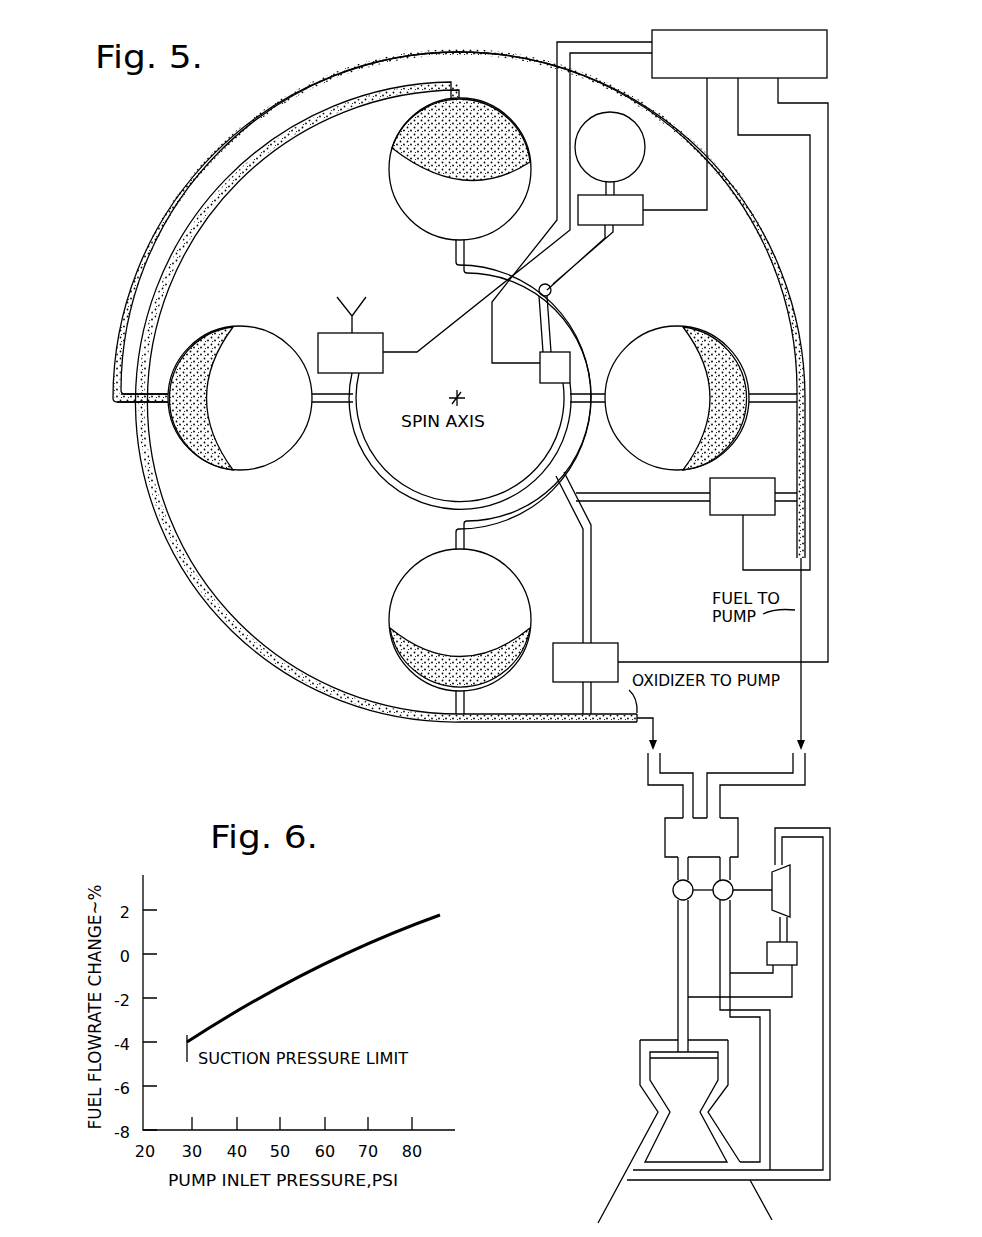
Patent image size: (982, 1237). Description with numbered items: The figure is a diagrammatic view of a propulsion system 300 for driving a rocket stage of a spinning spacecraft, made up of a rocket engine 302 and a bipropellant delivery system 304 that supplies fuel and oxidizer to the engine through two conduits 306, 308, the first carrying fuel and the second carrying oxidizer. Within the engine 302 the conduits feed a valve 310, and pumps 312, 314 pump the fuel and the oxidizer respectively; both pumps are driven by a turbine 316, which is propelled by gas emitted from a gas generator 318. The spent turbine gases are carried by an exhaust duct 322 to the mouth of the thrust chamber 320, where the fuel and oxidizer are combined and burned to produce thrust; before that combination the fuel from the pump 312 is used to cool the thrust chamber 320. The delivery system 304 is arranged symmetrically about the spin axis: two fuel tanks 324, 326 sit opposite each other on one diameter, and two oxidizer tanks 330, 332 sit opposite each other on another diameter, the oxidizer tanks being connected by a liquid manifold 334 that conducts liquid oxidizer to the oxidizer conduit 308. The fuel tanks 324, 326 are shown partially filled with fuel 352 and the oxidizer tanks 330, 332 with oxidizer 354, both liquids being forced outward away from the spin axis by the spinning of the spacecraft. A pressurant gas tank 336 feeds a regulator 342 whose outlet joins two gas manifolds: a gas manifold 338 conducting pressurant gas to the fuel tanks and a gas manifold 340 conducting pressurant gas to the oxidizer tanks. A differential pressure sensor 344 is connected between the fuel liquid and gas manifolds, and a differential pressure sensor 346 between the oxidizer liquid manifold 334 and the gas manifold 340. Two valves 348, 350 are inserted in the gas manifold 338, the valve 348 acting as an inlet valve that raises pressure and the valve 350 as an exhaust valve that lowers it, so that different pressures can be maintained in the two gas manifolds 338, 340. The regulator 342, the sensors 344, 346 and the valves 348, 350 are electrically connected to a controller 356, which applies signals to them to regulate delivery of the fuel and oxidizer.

The propulsion system 300 is at (622, 801).
The rocket engine 302 is at (618, 883).
The bipropellant delivery system 304 is at (283, 683).
The conduit 306 is at (793, 763).
The conduit 308 is at (661, 764).
The valve 310 is at (737, 818).
The pump 312 is at (728, 882).
The pump 314 is at (677, 900).
The turbine 316 is at (773, 910).
The gas generator 318 is at (797, 966).
The thrust chamber 320 is at (632, 1074).
The exhaust duct 322 is at (823, 1115).
The fuel tank 324 is at (248, 471).
The fuel tank 326 is at (641, 460).
The oxidizer tank 330 is at (411, 229).
The oxidizer tank 332 is at (398, 582).
The liquid manifold 334 is at (228, 623).
The pressurant gas tank 336 is at (640, 168).
The gas manifold 338 is at (382, 480).
The gas manifold 340 is at (586, 497).
The regulator 342 is at (643, 227).
The differential pressure sensor 344 is at (788, 478).
The differential pressure sensor 346 is at (618, 644).
The valve 348 is at (547, 384).
The valve 350 is at (380, 333).
The fuel 352 is at (240, 332).
The oxidizer 354 is at (393, 170).
The controller 356 is at (762, 80).